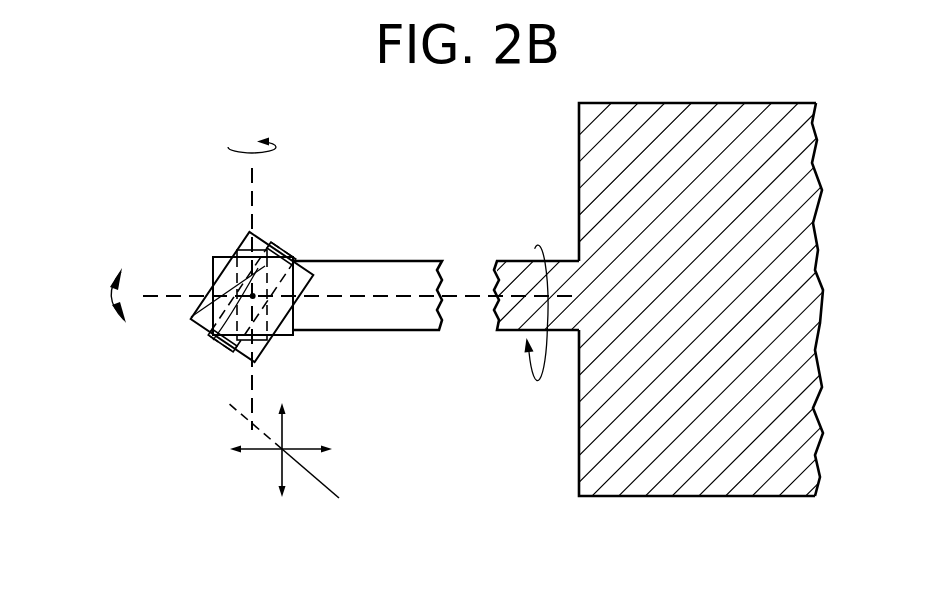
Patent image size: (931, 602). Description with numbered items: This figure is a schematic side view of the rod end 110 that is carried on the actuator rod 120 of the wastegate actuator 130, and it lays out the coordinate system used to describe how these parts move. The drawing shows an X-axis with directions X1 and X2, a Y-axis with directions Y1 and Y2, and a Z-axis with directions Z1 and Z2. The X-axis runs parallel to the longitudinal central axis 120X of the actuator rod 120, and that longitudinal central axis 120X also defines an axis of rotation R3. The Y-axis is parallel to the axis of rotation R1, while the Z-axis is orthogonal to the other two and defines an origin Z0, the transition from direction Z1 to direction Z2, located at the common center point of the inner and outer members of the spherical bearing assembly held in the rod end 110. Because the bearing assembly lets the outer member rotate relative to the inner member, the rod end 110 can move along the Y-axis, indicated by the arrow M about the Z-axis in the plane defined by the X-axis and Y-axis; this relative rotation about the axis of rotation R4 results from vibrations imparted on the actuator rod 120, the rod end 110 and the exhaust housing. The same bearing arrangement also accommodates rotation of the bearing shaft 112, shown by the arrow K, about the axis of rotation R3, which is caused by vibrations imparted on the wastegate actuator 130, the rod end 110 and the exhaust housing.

The rod end 110 is at (216, 256).
The bearing shaft 112 is at (265, 249).
The actuator rod 120 is at (428, 268).
The longitudinal central axis 120X is at (170, 296).
The wastegate actuator 130 is at (663, 492).
The arrow K is at (536, 270).
The axis of rotation R1 is at (252, 266).
The axis of rotation R3 is at (537, 325).
The axis of rotation R4 is at (268, 326).
The arrow M is at (108, 297).
The origin Z0 is at (213, 333).
The direction X1 is at (322, 447).
The direction X2 is at (241, 447).
The direction Y1 is at (279, 409).
The direction Y2 is at (279, 491).
The direction Z1 is at (328, 489).
The direction Z2 is at (238, 415).